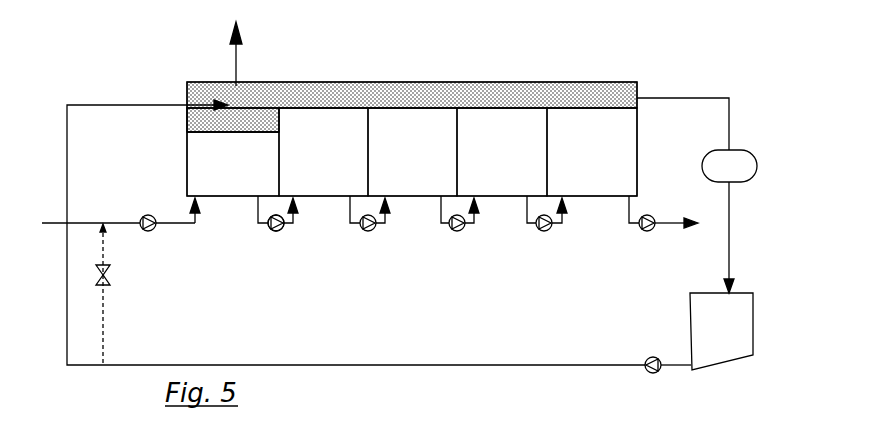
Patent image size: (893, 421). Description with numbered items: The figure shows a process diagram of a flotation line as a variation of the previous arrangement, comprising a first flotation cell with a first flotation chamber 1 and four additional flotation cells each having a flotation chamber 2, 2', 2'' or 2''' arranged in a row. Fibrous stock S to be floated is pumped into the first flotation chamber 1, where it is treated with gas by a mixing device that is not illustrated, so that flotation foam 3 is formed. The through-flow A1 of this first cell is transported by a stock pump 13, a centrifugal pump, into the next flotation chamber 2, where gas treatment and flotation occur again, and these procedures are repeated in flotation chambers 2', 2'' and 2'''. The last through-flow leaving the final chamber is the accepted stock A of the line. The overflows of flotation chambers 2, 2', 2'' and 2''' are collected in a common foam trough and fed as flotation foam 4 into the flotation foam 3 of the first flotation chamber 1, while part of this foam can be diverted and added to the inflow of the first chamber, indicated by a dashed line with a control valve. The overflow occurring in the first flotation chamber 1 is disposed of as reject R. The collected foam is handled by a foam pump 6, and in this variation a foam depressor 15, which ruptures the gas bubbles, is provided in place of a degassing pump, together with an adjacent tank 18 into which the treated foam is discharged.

The first flotation chamber 1 is at (243, 175).
The flotation chamber 2 is at (323, 152).
The flotation chamber 2' is at (412, 152).
The flotation chamber 2'' is at (502, 152).
The flotation chamber 2''' is at (592, 152).
The flotation foam 3 is at (202, 140).
The flotation foam 4 is at (585, 96).
The foam pump 6 is at (645, 360).
The stock pump 13 is at (281, 231).
The foam depressor 15 is at (722, 166).
The settling tank 18 is at (741, 344).
The accepted stock A is at (660, 228).
The through-flow A1 is at (258, 225).
The reject R is at (242, 24).
The fibrous stock S is at (172, 228).